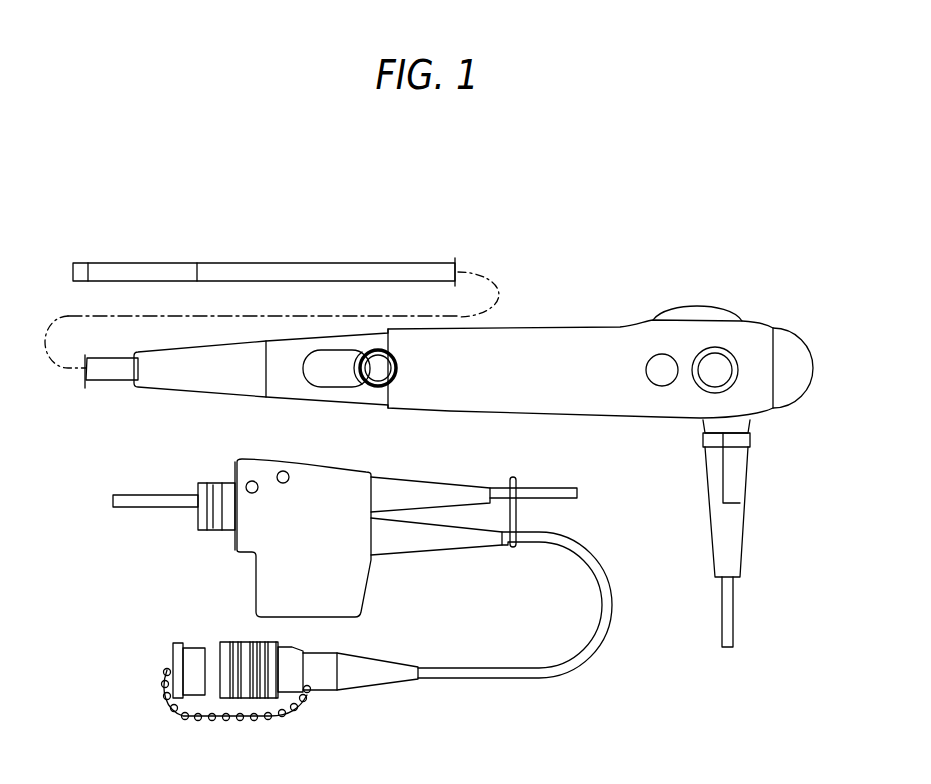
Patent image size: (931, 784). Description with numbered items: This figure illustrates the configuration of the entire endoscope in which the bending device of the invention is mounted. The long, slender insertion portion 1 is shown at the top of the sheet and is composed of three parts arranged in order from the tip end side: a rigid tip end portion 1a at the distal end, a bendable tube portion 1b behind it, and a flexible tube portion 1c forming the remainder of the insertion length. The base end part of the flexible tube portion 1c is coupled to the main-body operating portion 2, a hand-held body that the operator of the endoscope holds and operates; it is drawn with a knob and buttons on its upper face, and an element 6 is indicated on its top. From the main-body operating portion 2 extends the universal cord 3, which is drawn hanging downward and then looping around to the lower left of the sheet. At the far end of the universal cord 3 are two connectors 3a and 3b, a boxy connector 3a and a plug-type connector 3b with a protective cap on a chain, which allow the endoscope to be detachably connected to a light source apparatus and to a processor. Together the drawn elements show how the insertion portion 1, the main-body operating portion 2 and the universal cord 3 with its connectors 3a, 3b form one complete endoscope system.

The insertion portion 1 is at (343, 254).
The rigid tip end portion 1a is at (84, 276).
The bendable tube portion 1b is at (148, 270).
The flexible tube portion 1c is at (255, 268).
The main-body operating portion 2 is at (597, 324).
The bending operation knob 6 is at (714, 306).
The universal cord 3 is at (728, 625).
The connector 3a is at (265, 590).
The connector 3b is at (288, 657).